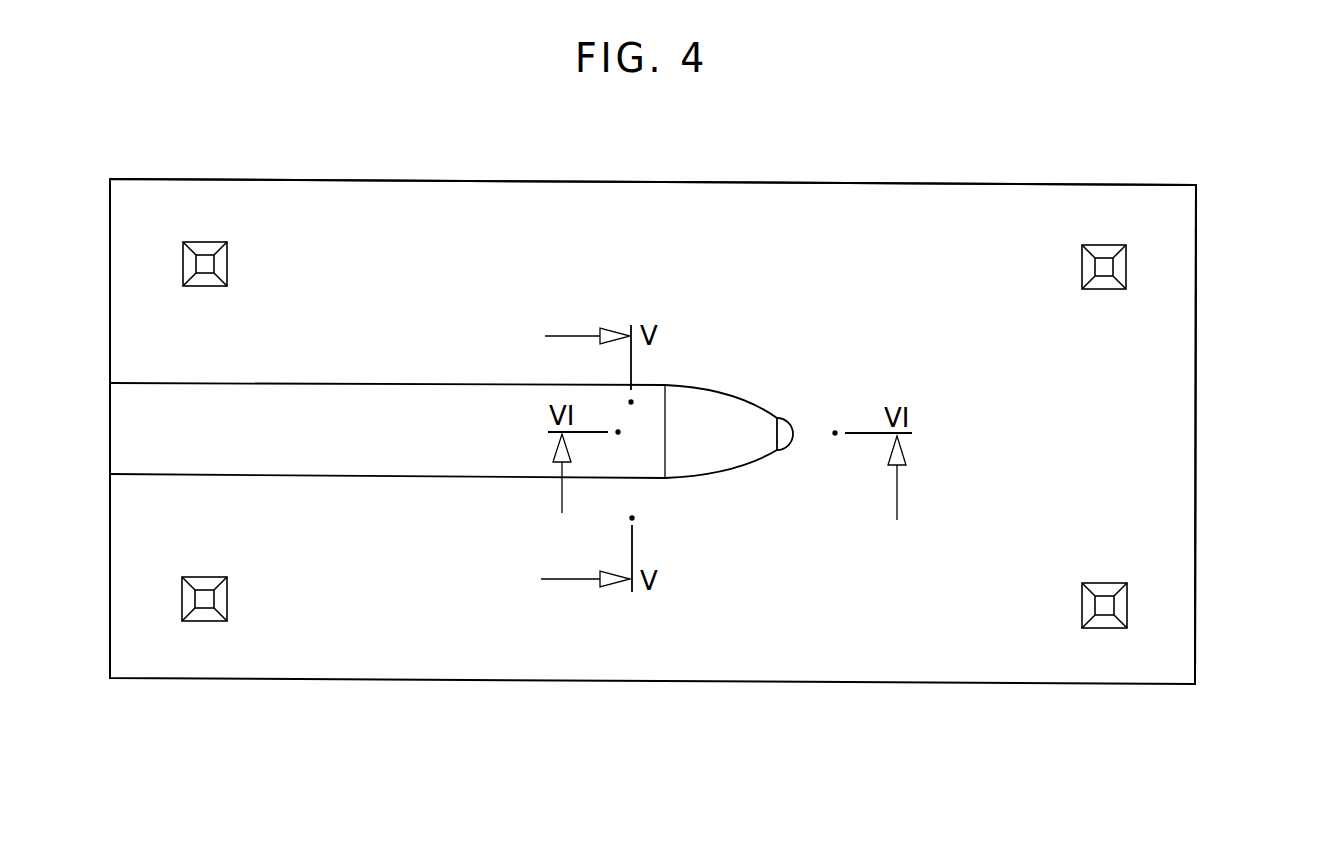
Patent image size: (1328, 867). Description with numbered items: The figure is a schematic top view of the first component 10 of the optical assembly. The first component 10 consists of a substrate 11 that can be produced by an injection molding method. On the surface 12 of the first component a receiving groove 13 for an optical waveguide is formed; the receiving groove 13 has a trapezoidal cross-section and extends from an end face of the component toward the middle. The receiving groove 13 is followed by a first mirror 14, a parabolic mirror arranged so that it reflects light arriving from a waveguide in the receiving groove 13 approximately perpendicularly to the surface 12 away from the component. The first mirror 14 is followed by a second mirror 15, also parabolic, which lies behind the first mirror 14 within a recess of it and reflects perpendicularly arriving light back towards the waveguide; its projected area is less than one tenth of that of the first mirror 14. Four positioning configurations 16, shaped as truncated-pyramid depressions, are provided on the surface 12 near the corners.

The first component 10 is at (979, 170).
The substrate 11 is at (433, 202).
The surface 12 is at (1178, 418).
The receiving groove 13 is at (399, 458).
The first mirror 14 is at (733, 447).
The second mirror 15 is at (790, 432).
The positioning configurations 16 is at (1103, 605).